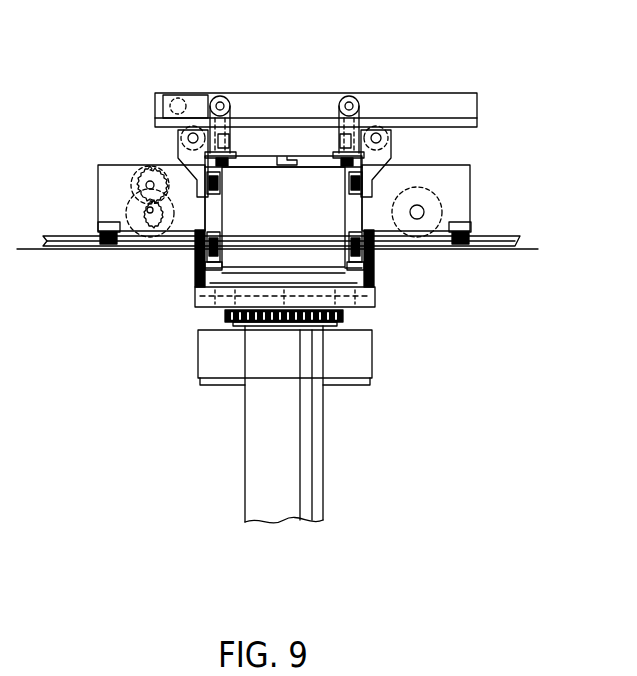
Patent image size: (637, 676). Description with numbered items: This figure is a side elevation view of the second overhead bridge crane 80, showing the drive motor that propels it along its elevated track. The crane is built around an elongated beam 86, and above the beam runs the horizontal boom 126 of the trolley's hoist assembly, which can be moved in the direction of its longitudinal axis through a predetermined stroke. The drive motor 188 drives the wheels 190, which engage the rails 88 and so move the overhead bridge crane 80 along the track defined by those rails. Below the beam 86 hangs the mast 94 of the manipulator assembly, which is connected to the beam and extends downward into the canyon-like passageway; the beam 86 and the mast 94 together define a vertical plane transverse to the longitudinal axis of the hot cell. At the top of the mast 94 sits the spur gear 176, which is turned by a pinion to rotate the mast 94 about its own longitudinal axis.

The overhead bridge crane 80 is at (402, 83).
The horizontal boom 126 is at (447, 107).
The beam 86 is at (292, 226).
The drive motor 188 is at (132, 187).
The wheels 190 is at (128, 215).
The rail 88 is at (495, 243).
The spur gear 176 is at (225, 313).
The mast 94 is at (268, 478).